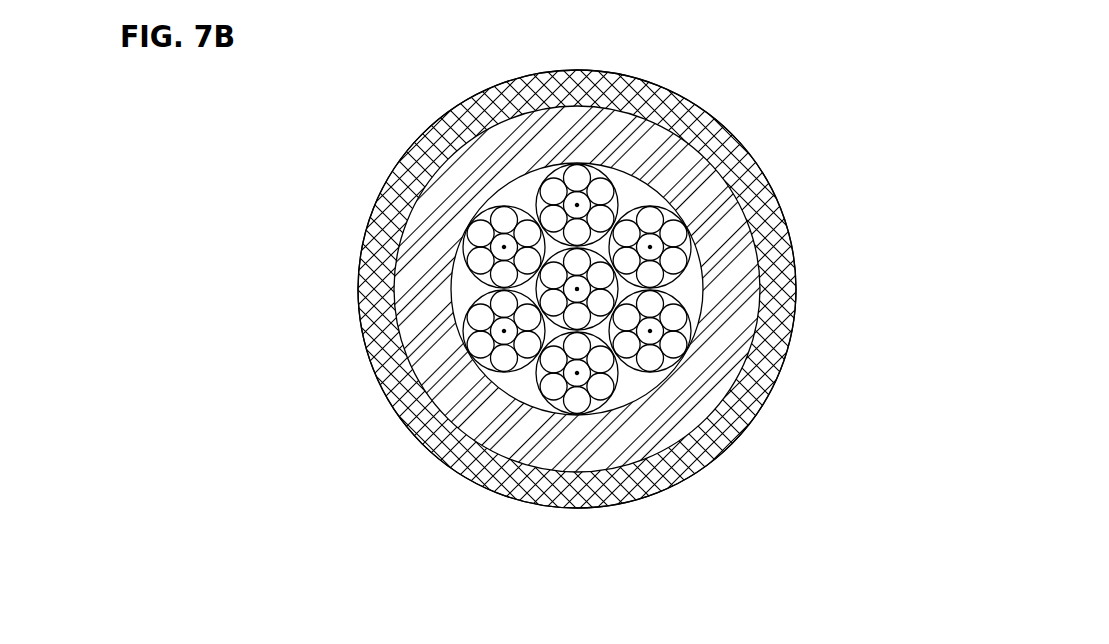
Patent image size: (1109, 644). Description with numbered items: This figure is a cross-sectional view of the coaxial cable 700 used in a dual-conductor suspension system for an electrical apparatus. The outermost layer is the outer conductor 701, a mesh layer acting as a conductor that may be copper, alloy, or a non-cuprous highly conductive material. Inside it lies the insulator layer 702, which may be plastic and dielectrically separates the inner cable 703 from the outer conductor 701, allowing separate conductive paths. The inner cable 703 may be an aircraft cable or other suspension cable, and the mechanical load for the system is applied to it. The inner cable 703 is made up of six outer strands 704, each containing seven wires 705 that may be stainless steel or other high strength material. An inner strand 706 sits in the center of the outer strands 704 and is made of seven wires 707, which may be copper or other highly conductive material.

The coaxial cable 700 is at (247, 223).
The outer conductor 701 is at (738, 142).
The insulator layer 702 is at (393, 342).
The inner cable 703 is at (487, 197).
The outer strands 704 is at (608, 410).
The wires 705 is at (547, 393).
The inner strand 706 is at (632, 294).
The wires 707 is at (610, 307).